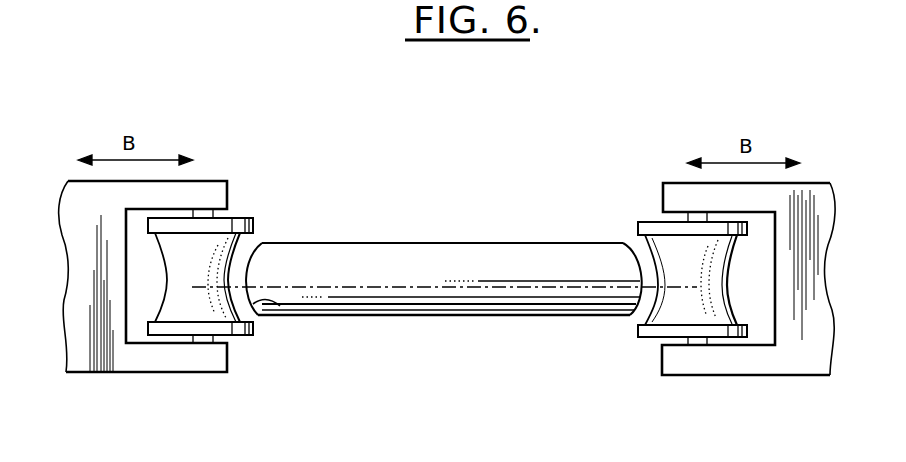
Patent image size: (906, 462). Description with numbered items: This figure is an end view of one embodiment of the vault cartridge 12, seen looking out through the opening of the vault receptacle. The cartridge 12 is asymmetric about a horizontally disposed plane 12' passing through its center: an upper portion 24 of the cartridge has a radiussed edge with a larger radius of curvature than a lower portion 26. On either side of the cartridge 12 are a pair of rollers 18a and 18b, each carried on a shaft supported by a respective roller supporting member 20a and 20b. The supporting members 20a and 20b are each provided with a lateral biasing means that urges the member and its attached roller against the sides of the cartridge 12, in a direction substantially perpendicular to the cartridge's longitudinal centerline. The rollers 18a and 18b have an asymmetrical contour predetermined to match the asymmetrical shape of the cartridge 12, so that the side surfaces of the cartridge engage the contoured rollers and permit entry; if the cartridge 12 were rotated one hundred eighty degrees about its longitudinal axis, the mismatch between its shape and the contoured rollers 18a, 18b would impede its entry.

The vault cartridge 12 is at (450, 256).
The horizontally disposed plane 12' is at (444, 242).
The upper portion 24 is at (256, 252).
The lower portion 26 is at (281, 303).
The roller 18a is at (246, 310).
The roller 18b is at (648, 318).
The roller supporting member 20a is at (160, 372).
The roller supporting member 20b is at (745, 375).